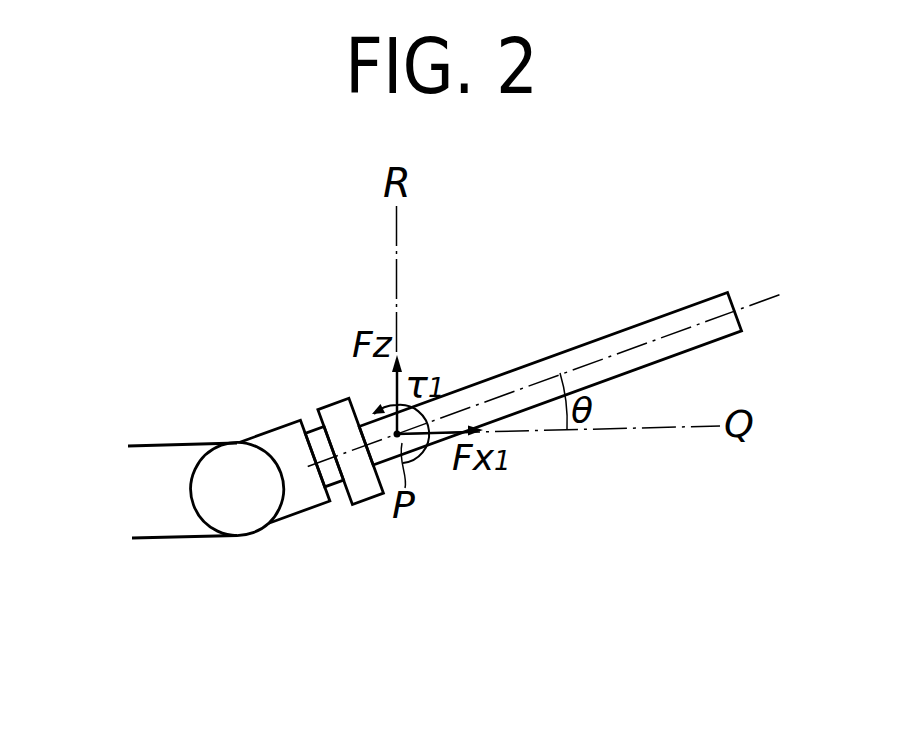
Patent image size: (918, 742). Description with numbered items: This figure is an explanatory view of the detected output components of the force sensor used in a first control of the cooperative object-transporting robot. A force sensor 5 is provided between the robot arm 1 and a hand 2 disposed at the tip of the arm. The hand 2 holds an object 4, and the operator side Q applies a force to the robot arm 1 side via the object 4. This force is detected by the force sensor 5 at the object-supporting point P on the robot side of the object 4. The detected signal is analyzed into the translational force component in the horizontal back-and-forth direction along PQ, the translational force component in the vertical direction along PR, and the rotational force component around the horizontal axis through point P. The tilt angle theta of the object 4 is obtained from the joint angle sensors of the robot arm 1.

The robot arm 1 is at (161, 456).
The hand 2 is at (338, 410).
The object 4 is at (623, 336).
The force sensor 5 is at (335, 488).